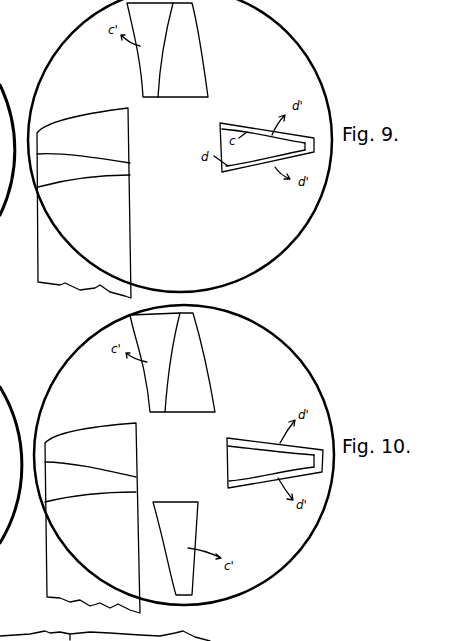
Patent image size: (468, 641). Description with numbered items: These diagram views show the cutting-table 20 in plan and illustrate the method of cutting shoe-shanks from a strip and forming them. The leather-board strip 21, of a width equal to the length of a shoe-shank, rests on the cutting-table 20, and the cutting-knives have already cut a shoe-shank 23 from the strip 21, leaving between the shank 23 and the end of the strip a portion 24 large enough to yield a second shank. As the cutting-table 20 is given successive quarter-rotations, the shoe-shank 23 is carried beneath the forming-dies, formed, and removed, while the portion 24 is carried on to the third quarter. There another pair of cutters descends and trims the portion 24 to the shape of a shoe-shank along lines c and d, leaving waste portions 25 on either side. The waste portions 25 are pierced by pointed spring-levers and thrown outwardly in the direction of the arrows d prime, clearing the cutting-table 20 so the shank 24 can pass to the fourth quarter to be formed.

In FIG. 9, the cutting-table 20 is at (180, 146).
In FIG. 10, the cutting-table 20 is at (184, 455).
In FIG. 9, the leather-board strip 21 is at (122, 225).
In FIG. 10, the leather-board strip 21 is at (58, 553).
In FIG. 9, the shoe-shank 23 is at (105, 95).
In FIG. 10, the shoe-shank 23 is at (112, 407).
In FIG. 9, the portion of the leather-board strip 24 is at (191, 87).
In FIG. 10, the portion of the leather-board strip 24 is at (201, 454).
In FIG. 9, the waste portions 25 is at (289, 137).
In FIG. 10, the waste portions 25 is at (261, 445).